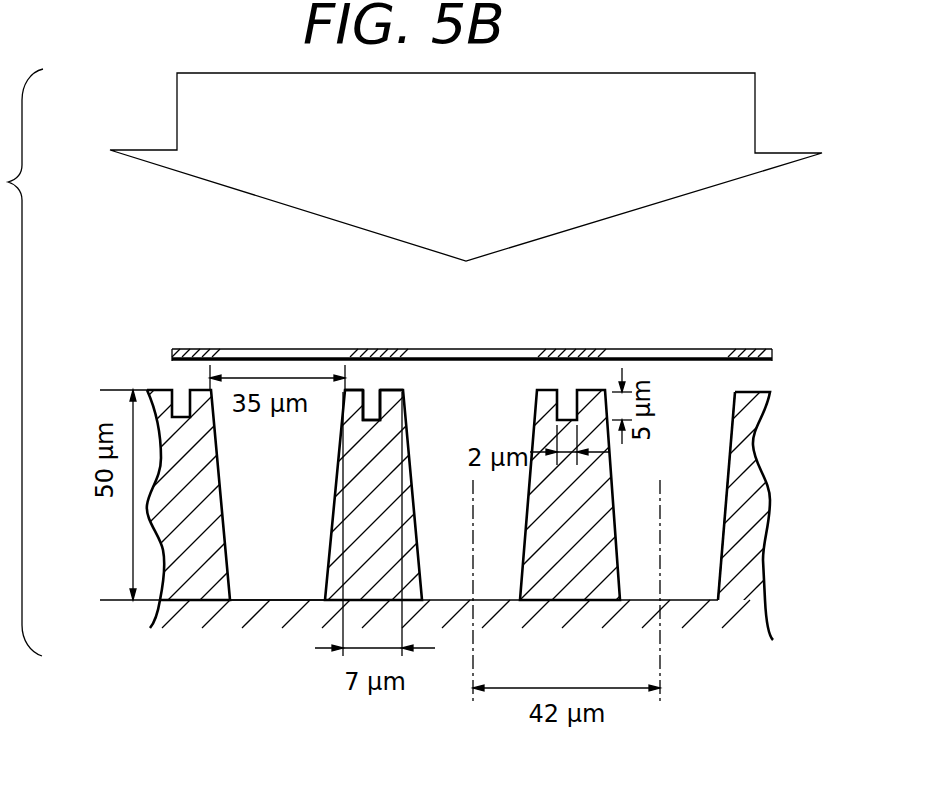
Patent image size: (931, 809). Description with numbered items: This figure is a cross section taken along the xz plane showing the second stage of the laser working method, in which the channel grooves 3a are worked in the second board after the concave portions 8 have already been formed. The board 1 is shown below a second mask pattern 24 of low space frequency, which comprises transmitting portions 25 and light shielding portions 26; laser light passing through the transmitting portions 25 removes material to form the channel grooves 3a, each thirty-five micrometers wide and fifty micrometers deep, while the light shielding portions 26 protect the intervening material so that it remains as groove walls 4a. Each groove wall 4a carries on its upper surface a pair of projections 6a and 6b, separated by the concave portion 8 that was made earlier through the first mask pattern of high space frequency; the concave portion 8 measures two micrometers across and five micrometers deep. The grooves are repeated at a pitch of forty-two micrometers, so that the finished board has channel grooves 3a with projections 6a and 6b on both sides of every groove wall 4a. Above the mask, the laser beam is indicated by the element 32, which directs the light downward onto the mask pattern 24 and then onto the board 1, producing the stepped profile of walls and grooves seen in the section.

The substrate 1 is at (776, 432).
The channel grooves 3a is at (705, 517).
The groove walls 4a is at (337, 477).
The projection 6a is at (352, 414).
The projection 6b is at (398, 412).
The concave portion 8 is at (372, 413).
The second mask pattern 24 is at (735, 350).
The transmitting portions 25 is at (490, 350).
The light shielding portions 26 is at (211, 350).
The cover plate 32 is at (748, 125).